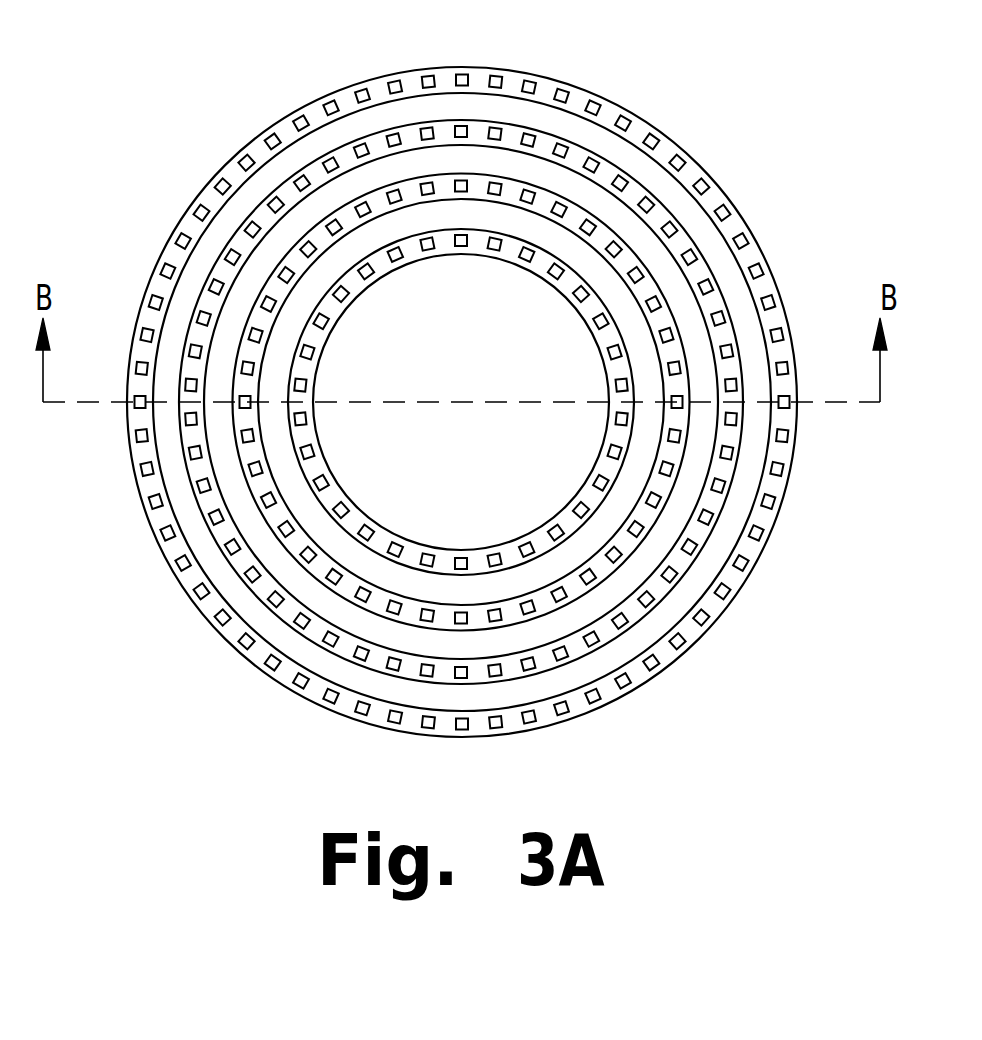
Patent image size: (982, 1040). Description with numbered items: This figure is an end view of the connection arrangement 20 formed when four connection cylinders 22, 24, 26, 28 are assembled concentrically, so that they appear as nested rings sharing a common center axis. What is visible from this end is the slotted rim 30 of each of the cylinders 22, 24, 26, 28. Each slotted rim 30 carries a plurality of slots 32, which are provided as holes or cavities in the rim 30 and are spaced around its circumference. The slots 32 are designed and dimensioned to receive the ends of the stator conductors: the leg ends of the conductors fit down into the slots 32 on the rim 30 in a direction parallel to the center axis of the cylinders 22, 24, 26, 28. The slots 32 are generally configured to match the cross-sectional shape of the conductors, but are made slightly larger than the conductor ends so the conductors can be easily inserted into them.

The connection arrangement 20 is at (469, 392).
The cylinder 22 is at (762, 553).
The cylinder 24 is at (740, 436).
The cylinder 26 is at (692, 242).
The cylinder 28 is at (605, 337).
The slotted rim 30 is at (255, 210).
The slots 32 is at (495, 72).